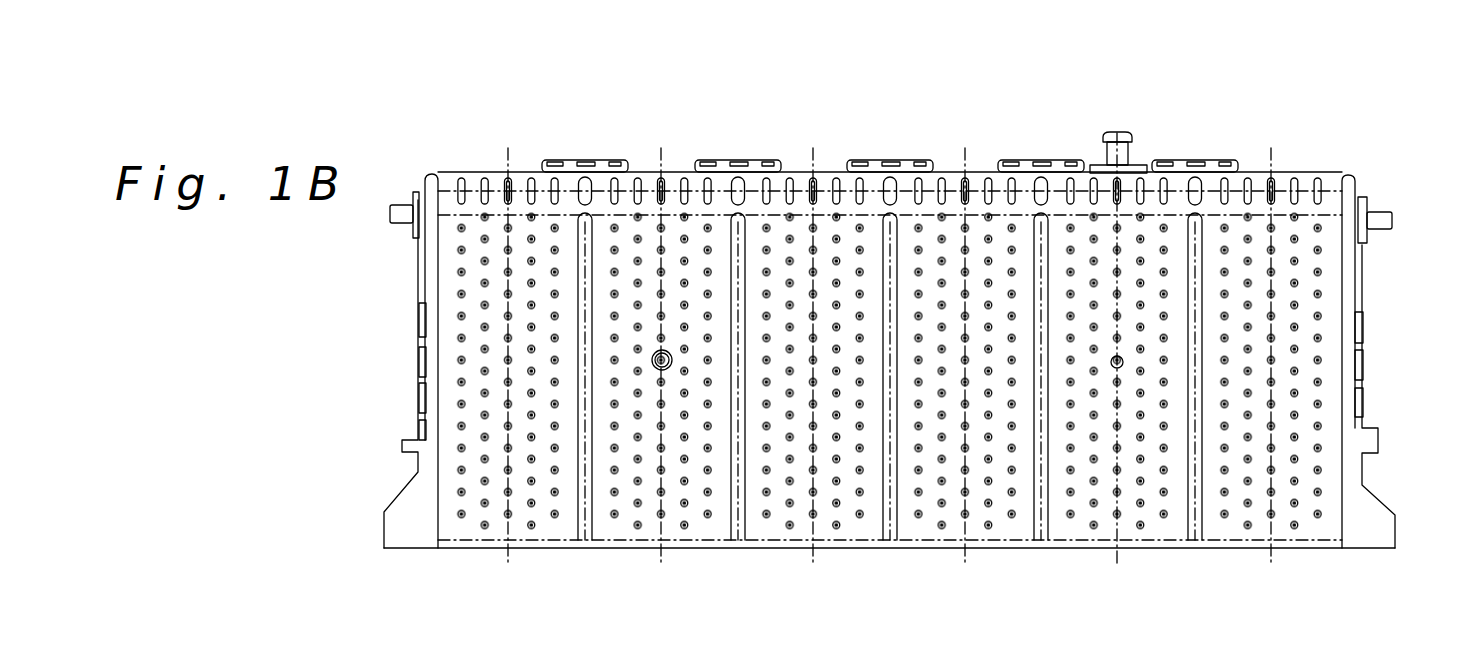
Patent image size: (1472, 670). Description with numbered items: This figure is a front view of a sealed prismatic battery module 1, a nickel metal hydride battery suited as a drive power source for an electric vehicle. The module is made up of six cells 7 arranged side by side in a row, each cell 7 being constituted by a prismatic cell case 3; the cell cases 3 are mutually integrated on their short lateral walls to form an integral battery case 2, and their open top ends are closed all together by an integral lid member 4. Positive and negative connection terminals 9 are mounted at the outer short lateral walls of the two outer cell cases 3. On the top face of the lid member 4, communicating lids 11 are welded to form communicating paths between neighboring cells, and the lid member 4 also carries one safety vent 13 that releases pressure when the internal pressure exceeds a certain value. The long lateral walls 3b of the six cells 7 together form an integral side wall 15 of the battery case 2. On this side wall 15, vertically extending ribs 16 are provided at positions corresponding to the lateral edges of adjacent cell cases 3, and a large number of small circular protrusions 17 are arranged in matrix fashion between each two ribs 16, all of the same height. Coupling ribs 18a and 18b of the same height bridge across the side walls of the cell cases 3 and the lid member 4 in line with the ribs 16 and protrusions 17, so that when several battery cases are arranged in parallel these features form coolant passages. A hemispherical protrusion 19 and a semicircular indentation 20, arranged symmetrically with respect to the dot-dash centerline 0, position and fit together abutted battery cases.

The battery module 1 is at (380, 272).
The integral battery case 2 is at (410, 398).
The cell case 3 is at (540, 553).
The long lateral wall 3b is at (470, 302).
The lid member 4 is at (468, 175).
The cell 7 is at (485, 553).
The connection terminal 9 is at (402, 206).
The communicating lid 11 is at (575, 161).
The safety vent 13 is at (1130, 161).
The side wall 15 is at (608, 527).
The rib 16 is at (417, 334).
The protrusion 17 is at (512, 522).
The coupling rib 18a is at (587, 193).
The coupling rib 18b is at (556, 177).
The protrusion 19 is at (1124, 362).
The indentation 20 is at (652, 361).
The centerline 0 is at (898, 243).